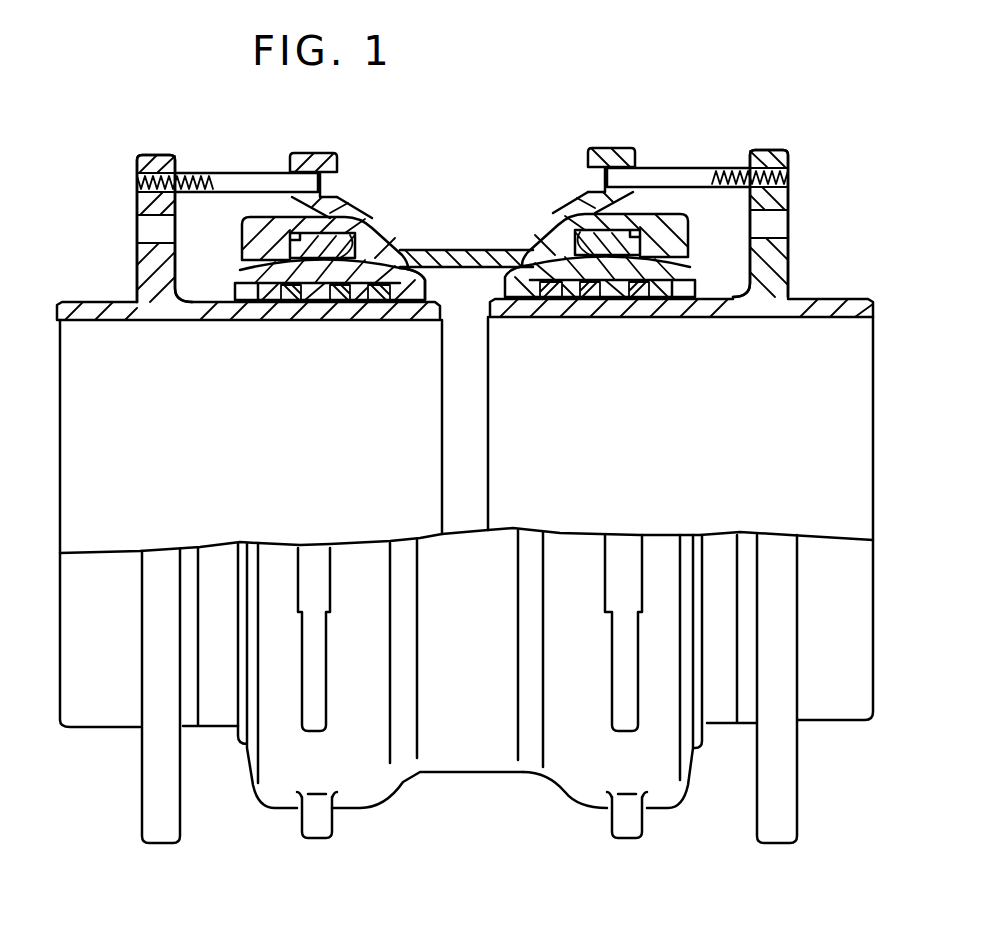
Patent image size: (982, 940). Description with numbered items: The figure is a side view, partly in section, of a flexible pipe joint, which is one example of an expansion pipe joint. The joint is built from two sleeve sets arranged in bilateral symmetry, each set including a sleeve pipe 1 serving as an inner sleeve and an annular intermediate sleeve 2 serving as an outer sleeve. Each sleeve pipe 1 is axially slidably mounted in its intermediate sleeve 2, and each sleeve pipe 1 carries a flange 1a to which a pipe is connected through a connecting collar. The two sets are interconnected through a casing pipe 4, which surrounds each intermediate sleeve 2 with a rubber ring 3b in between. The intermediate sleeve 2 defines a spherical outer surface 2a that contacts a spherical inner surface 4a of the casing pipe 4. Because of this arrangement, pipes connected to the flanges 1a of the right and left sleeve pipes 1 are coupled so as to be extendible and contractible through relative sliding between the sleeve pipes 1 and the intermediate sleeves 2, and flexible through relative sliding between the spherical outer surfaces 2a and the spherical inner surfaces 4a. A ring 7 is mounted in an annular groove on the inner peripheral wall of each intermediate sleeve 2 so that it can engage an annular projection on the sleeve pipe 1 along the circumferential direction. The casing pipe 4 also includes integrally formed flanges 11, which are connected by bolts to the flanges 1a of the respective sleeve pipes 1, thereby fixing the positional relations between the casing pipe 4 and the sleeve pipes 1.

The sleeve pipe 1 is at (83, 312).
The flange 1a is at (135, 163).
The intermediate sleeve 2 is at (276, 282).
The spherical outer surface 2a is at (407, 260).
The rubber ring 3b is at (347, 247).
The casing pipe 4 is at (502, 253).
The spherical inner surface 4a is at (367, 305).
The ring 7 is at (291, 303).
The flange 11 is at (313, 155).